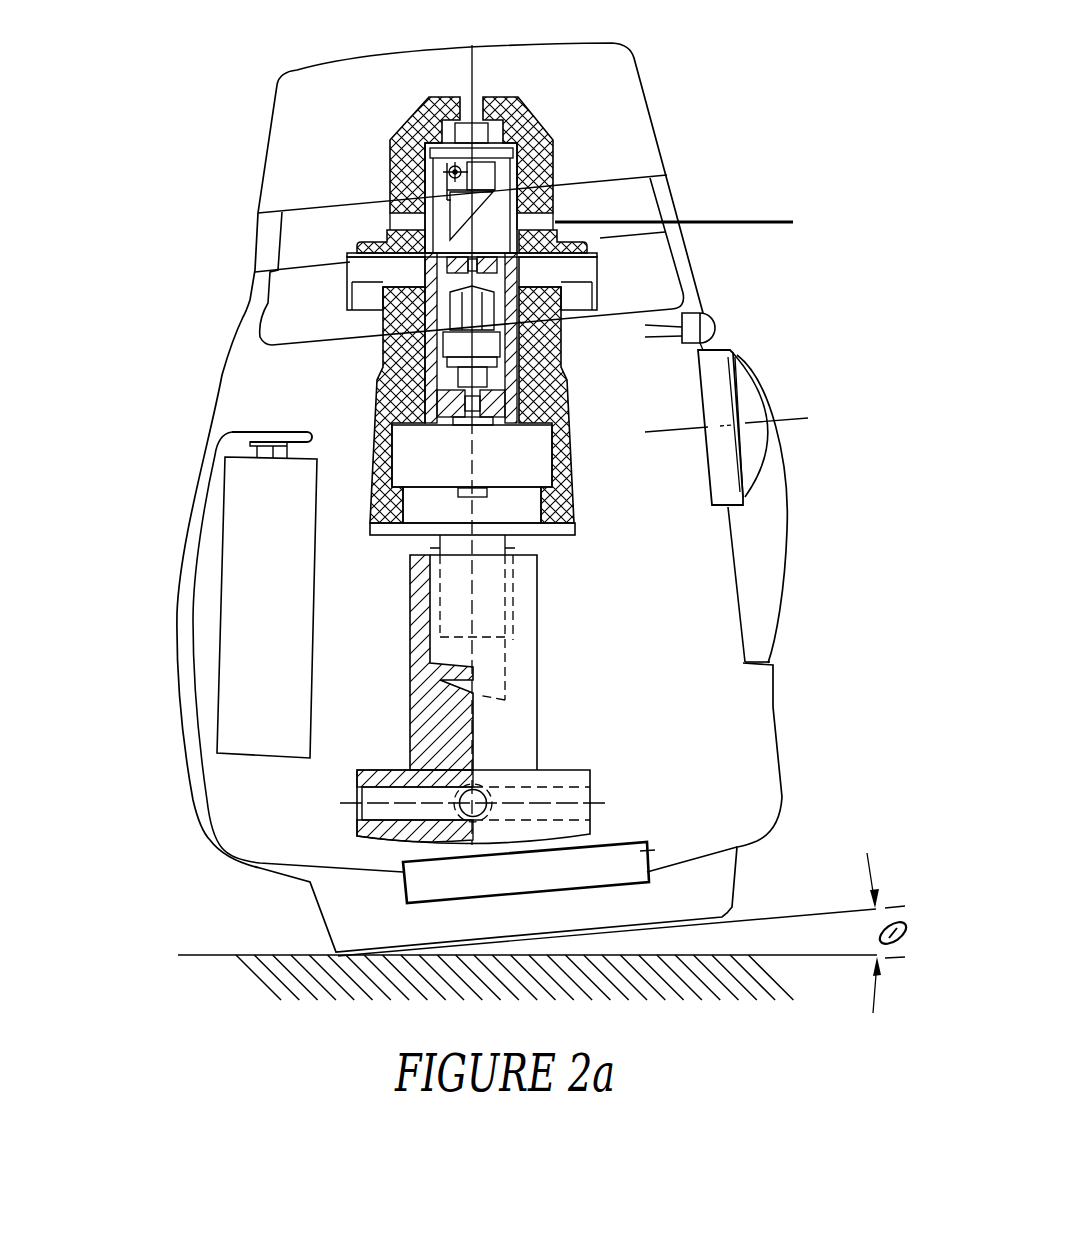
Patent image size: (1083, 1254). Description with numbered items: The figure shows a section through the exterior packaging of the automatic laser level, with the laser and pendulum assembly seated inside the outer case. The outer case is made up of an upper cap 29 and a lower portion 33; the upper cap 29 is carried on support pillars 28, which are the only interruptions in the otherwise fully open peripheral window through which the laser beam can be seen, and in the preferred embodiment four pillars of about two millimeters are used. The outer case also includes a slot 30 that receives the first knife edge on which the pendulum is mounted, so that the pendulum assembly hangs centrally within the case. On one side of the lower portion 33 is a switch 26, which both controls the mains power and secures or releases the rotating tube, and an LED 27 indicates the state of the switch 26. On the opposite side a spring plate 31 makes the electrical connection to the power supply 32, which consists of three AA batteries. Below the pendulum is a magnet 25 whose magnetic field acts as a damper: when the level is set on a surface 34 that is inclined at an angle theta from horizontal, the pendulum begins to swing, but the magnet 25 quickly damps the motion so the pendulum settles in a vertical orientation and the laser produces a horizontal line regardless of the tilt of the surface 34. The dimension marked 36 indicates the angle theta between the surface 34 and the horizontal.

The magnet 25 is at (645, 848).
The switch 26 is at (760, 575).
The LED 27 is at (705, 327).
The support pillars 28 is at (662, 202).
The upper cap 29 is at (607, 95).
The slot 30 is at (465, 325).
The spring plate 31 is at (267, 423).
The power supply 32 is at (270, 570).
The lower portion 33 is at (190, 750).
The surface 34 is at (233, 954).
The angle theta 36 is at (624, 914).